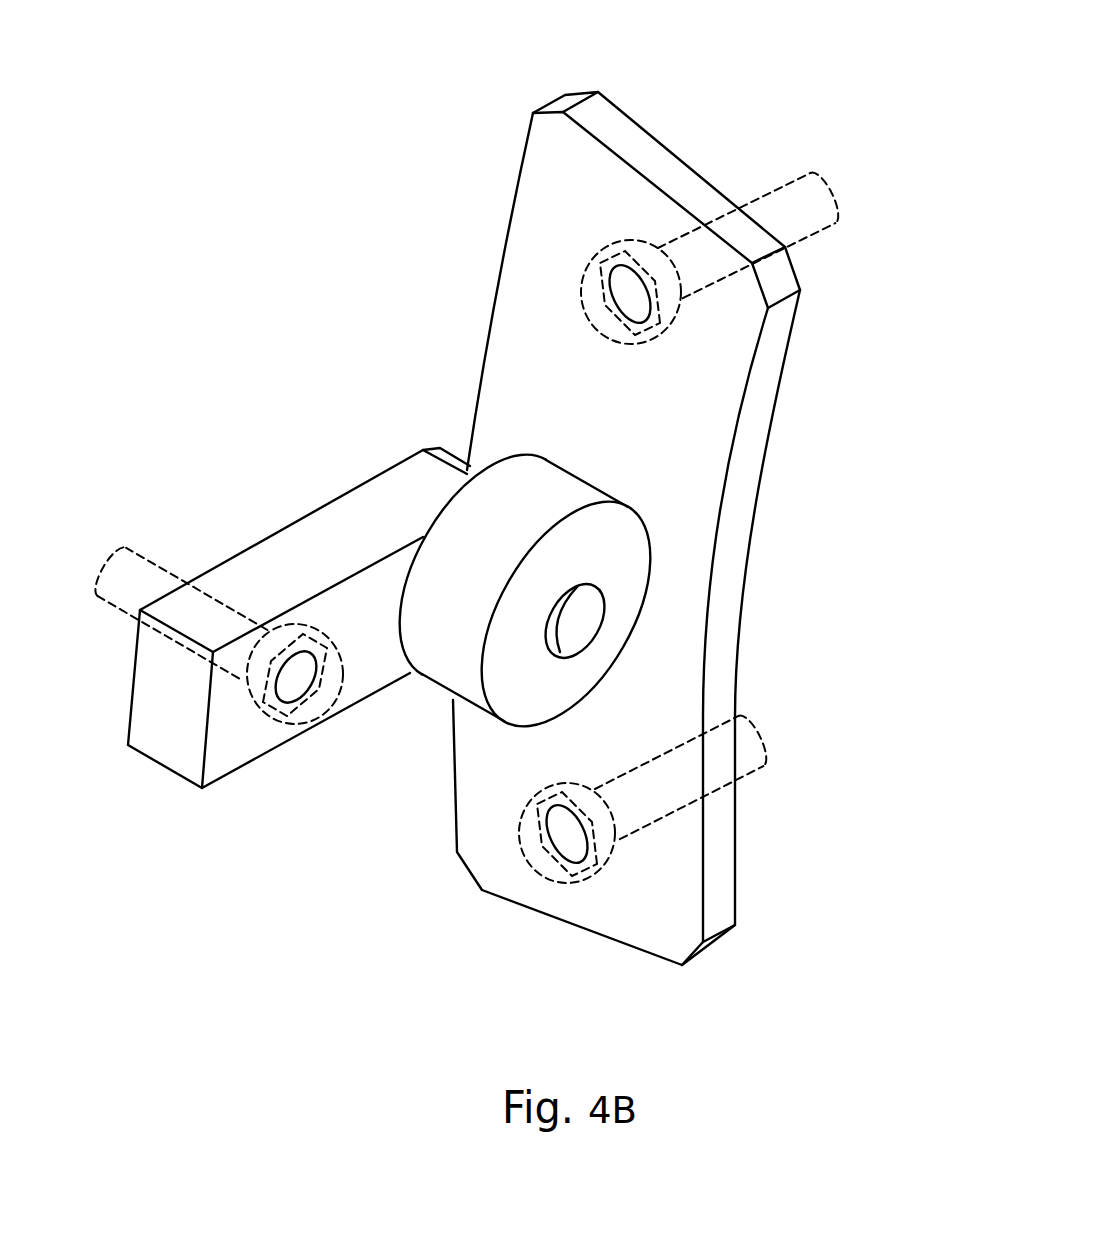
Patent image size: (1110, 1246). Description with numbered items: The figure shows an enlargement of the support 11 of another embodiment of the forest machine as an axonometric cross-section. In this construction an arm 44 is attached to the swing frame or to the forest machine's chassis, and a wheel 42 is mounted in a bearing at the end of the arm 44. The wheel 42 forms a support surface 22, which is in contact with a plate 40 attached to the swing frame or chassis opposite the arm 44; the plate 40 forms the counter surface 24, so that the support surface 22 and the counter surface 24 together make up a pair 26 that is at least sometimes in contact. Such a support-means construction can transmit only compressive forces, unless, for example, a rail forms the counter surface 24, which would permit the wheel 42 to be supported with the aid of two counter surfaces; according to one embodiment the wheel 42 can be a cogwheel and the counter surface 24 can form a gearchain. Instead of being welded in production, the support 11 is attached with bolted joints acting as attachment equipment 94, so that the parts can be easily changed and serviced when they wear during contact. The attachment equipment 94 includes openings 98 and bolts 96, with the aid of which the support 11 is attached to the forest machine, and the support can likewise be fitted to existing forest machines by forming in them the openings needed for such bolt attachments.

The support 11 is at (778, 165).
The support surface 22 is at (485, 523).
The counter surface 24 is at (620, 441).
The pair 26 is at (408, 393).
The plate 40 is at (562, 255).
The wheel 42 is at (511, 703).
The arm 44 is at (224, 741).
The attachment equipment 94 is at (282, 595).
The bolts 96 is at (830, 223).
The openings 98 is at (653, 253).